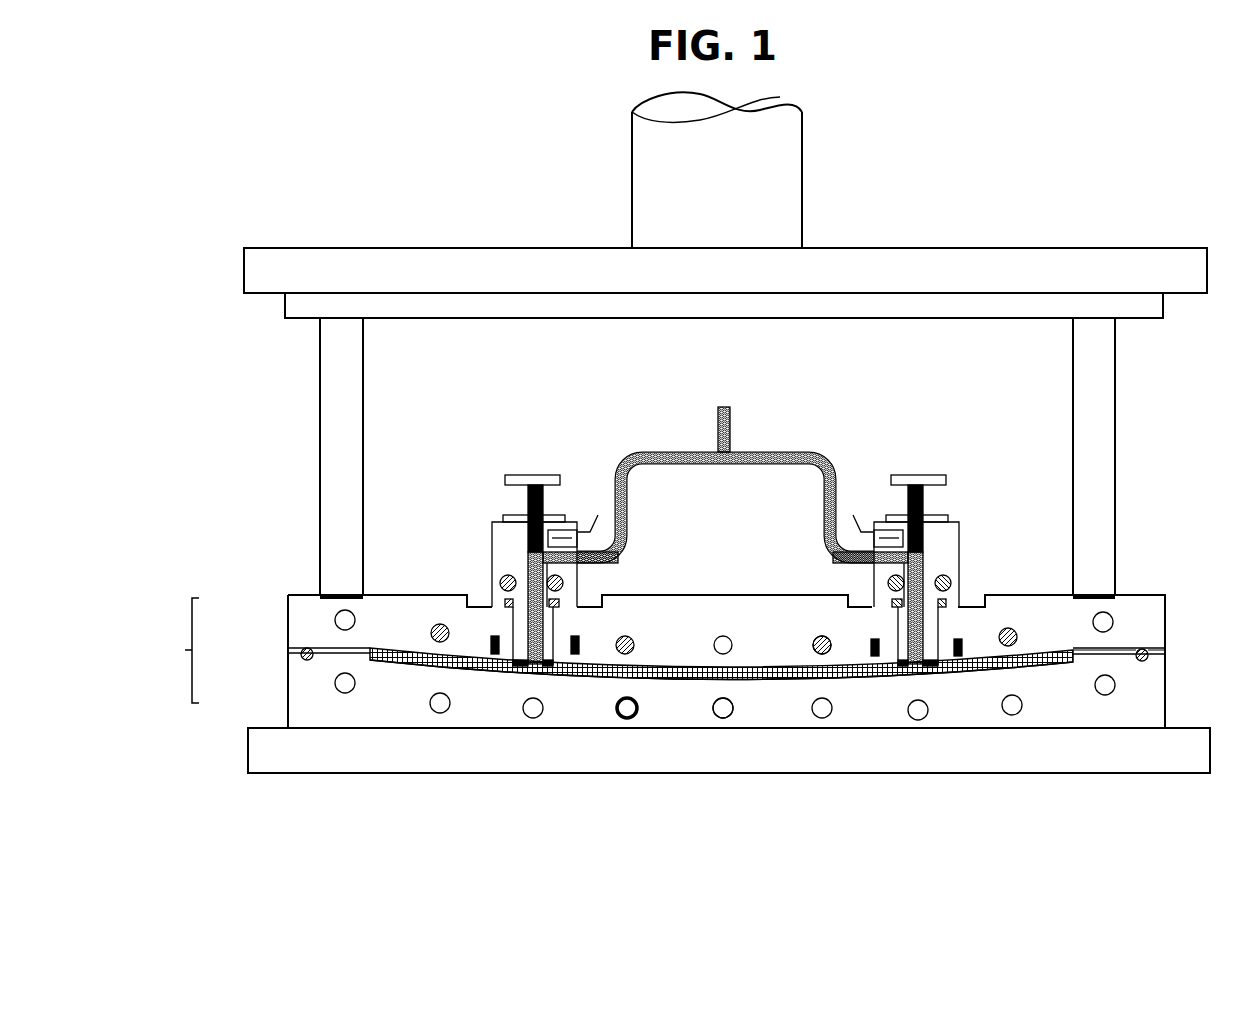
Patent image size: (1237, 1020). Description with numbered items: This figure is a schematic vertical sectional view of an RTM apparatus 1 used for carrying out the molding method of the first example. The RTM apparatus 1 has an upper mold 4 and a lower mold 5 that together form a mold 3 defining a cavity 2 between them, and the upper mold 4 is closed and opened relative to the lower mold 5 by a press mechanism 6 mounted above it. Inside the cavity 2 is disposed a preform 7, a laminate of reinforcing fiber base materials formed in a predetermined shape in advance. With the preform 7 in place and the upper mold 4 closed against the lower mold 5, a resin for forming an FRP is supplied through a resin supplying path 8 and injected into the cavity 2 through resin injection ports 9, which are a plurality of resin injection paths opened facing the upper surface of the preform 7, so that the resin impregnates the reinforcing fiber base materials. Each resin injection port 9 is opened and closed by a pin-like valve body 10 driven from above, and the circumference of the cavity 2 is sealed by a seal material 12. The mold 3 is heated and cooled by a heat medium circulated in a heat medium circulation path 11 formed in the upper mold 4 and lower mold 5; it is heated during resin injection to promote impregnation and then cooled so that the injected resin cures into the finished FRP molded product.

The RTM apparatus 1 is at (1003, 197).
The cavity 2 is at (473, 688).
The mold 3 is at (662, 661).
The upper mold 4 is at (298, 618).
The lower mold 5 is at (307, 698).
The press mechanism 6 is at (668, 195).
The preform 7 is at (670, 687).
The resin supplying path 8 is at (753, 452).
The resin injection port 9 is at (548, 637).
The pin-like valve body 10 is at (520, 495).
The heat medium circulation path 11 is at (816, 655).
The seal material 12 is at (1146, 658).